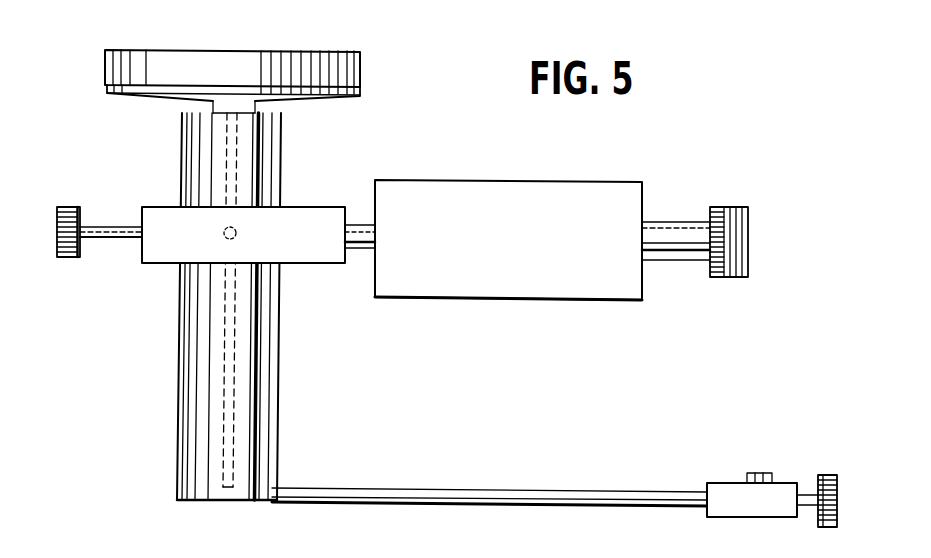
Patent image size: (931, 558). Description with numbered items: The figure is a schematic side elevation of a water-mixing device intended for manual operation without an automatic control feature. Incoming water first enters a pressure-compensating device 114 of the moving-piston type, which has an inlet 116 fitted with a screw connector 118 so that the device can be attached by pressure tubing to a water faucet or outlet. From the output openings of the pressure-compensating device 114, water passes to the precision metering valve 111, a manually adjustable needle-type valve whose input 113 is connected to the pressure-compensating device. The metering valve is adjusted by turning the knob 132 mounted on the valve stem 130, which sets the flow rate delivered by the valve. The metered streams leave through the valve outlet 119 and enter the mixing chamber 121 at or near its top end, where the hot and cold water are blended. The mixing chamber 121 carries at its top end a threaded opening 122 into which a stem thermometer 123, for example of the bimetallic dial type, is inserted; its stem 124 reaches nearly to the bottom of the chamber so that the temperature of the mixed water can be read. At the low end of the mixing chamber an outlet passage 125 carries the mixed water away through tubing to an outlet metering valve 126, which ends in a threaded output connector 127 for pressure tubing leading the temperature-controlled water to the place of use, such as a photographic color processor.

The precision metering valve 111 is at (290, 207).
The input 113 is at (357, 224).
The pressure-compensating device 114 is at (586, 191).
The inlet 116 is at (661, 222).
The screw connector 118 is at (748, 216).
The outlet 119 is at (236, 238).
The mixing chamber 121 is at (277, 375).
The threaded opening 122 is at (282, 128).
The stem thermometer 123 is at (357, 53).
The stem 124 is at (233, 440).
The outlet passage 125 is at (272, 490).
The outlet metering valve 126 is at (755, 518).
The threaded output connector 127 is at (762, 473).
The valve stem 130 is at (116, 238).
The knob 132 is at (67, 257).